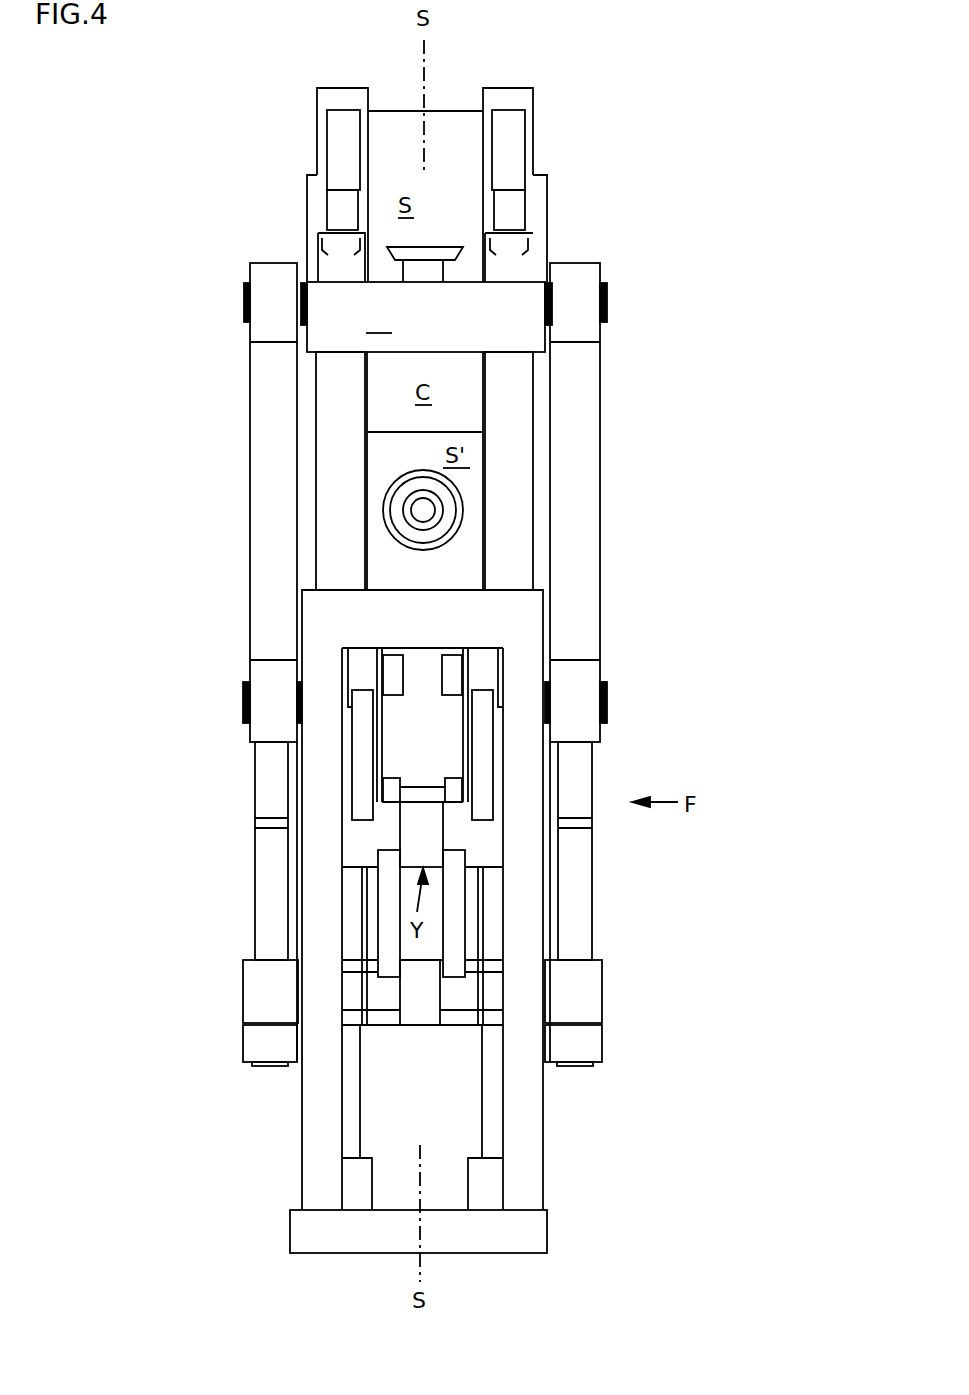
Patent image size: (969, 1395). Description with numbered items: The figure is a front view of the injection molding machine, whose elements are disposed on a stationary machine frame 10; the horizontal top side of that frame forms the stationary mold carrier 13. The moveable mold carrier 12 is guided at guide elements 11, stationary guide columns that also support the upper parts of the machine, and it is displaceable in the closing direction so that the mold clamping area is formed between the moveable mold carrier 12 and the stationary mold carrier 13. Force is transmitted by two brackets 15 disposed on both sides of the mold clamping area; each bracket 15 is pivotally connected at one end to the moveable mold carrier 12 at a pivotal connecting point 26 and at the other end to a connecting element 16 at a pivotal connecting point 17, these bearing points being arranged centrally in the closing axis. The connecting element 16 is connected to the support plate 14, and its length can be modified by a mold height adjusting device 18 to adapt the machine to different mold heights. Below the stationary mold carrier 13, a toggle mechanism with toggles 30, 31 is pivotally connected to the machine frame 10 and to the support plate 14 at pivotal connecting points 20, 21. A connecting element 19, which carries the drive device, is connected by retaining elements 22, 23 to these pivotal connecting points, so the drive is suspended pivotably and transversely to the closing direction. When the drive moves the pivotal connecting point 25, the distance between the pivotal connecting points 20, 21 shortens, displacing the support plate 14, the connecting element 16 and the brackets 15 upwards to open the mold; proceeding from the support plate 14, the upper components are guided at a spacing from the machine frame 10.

The machine frame 10 is at (312, 1153).
The guide elements 11 is at (333, 388).
The moveable mold carrier 12 is at (426, 317).
The stationary mold carrier 13 is at (512, 590).
The support plate 14 is at (282, 1000).
The bracket 15 is at (277, 467).
The connecting element 16 is at (270, 898).
The pivotal connecting point 17 is at (243, 693).
The mold height adjusting device 18 is at (265, 1047).
The connecting element 19 is at (428, 793).
The pivotal connecting point 20 is at (397, 665).
The pivotal connecting point 21 is at (410, 1000).
The retaining element 22 is at (365, 893).
The retaining element 23 is at (377, 720).
The pivotal connecting point 25 is at (412, 838).
The pivotal connecting point 26 is at (247, 300).
The toggle 30 is at (388, 930).
The toggle 31 is at (363, 758).